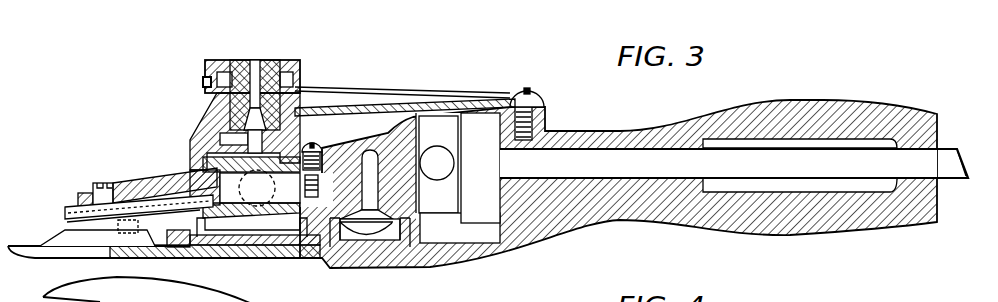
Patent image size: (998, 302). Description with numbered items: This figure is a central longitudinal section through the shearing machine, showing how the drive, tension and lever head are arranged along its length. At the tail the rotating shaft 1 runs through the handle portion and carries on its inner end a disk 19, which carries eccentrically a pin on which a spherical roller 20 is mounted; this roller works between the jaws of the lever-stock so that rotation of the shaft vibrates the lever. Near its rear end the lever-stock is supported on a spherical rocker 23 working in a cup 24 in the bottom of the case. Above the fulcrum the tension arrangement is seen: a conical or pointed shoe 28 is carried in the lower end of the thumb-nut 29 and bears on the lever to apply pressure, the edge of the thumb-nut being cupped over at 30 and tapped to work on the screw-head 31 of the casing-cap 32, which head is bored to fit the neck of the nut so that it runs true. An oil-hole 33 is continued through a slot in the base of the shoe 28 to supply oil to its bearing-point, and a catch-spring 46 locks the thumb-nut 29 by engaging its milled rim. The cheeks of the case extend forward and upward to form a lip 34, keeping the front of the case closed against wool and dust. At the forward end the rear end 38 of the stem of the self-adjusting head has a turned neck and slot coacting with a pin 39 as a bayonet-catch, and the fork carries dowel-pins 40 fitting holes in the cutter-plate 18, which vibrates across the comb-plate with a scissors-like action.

The rotating shaft 1 is at (953, 147).
The cutter-plate 18 is at (65, 235).
The disk 19 is at (480, 168).
The spherical roller 20 is at (437, 163).
The spherical rocker 23 is at (385, 133).
The cup 24 is at (387, 247).
The conical or pointed shoe 28 is at (292, 137).
The thumb-nut 29 is at (273, 62).
The cupped-over edge of thumb-nut 30 is at (203, 82).
The screw-head of casing-cap 31 is at (208, 97).
The casing-cap 32 is at (420, 101).
The oil-hole 33 is at (253, 62).
The lip 34 is at (193, 163).
The rear end of stem 38 is at (315, 175).
The pin 39 is at (313, 145).
The dowel-pins 40 is at (125, 185).
The catch-spring 46 is at (370, 90).